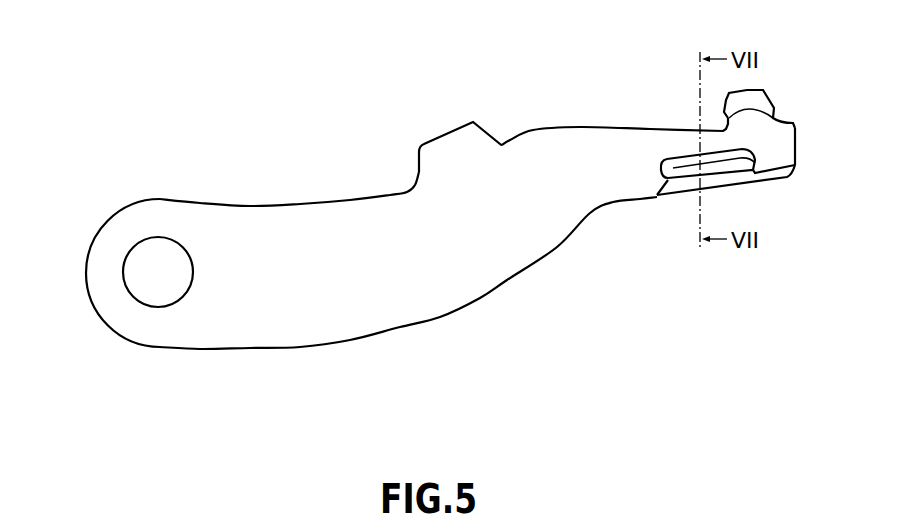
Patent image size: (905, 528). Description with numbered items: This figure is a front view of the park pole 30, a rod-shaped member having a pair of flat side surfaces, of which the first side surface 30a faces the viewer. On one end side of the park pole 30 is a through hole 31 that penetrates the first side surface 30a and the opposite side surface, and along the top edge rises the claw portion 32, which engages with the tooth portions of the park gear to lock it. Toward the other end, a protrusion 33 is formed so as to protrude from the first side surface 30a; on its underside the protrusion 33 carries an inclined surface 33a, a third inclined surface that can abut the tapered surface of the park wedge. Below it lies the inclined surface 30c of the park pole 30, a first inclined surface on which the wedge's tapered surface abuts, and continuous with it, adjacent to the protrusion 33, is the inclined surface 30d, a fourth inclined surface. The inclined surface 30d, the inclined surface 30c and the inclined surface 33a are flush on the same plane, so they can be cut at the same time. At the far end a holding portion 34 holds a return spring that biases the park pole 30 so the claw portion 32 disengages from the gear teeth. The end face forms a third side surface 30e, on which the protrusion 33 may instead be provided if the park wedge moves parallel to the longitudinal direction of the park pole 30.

The park pole 30 is at (299, 116).
The first side surface 30a is at (432, 267).
The inclined surface 30c is at (677, 188).
The inclined surface 30d is at (778, 178).
The third side surface 30e is at (798, 142).
The through hole 31 is at (150, 272).
The claw portion 32 is at (450, 157).
The protrusion 33 is at (680, 162).
The inclined surface 33a is at (738, 171).
The holding portion 34 is at (752, 103).